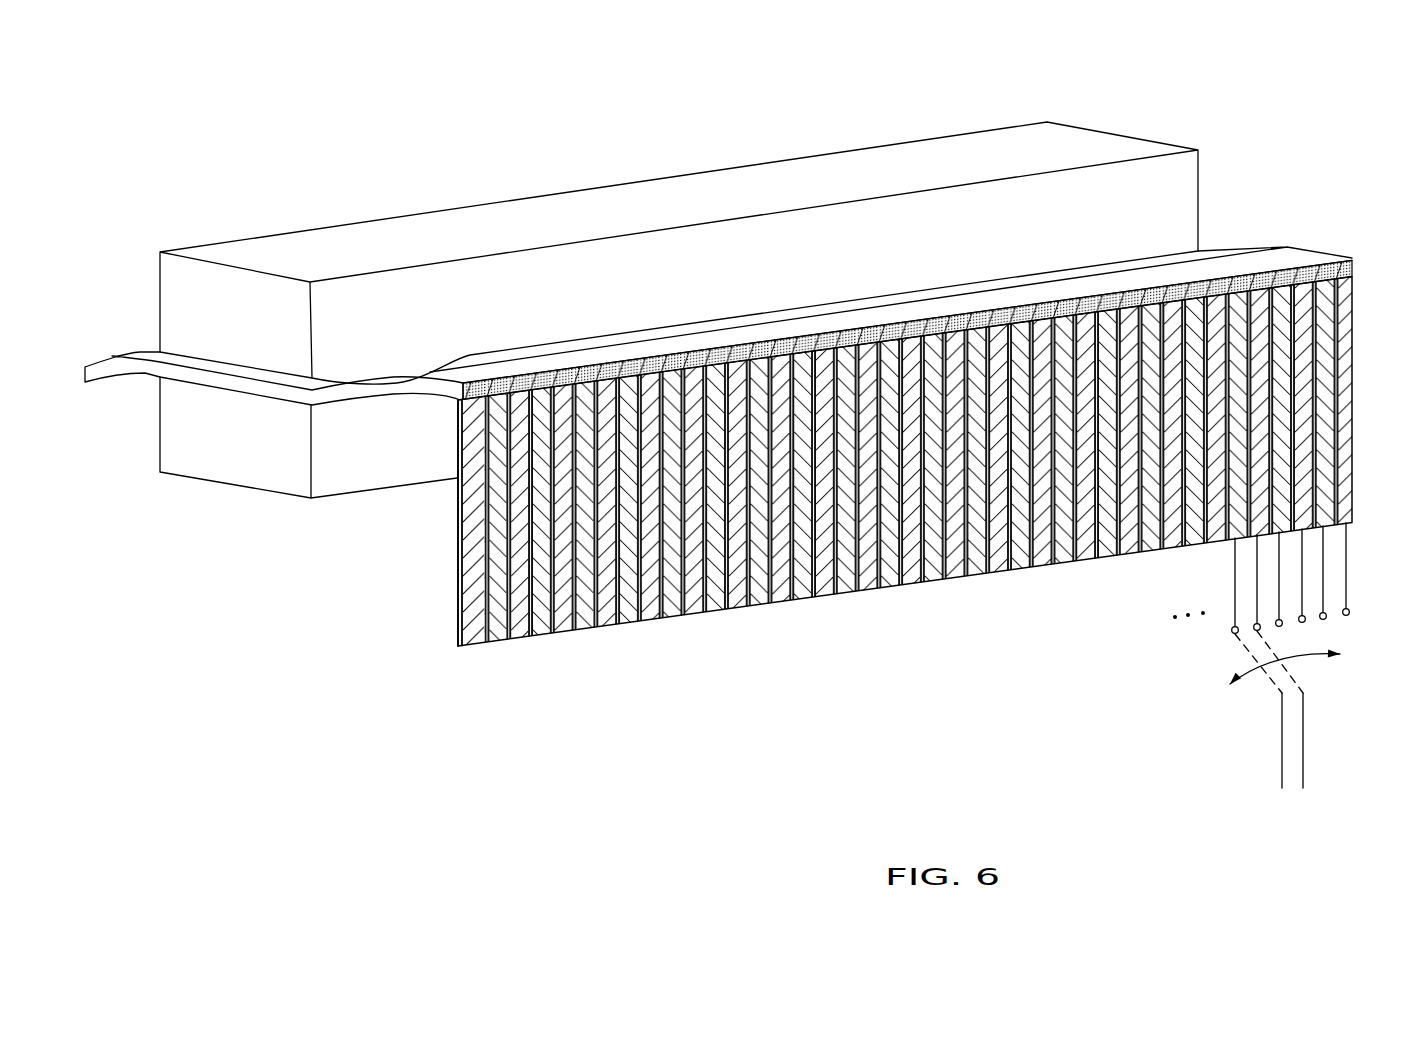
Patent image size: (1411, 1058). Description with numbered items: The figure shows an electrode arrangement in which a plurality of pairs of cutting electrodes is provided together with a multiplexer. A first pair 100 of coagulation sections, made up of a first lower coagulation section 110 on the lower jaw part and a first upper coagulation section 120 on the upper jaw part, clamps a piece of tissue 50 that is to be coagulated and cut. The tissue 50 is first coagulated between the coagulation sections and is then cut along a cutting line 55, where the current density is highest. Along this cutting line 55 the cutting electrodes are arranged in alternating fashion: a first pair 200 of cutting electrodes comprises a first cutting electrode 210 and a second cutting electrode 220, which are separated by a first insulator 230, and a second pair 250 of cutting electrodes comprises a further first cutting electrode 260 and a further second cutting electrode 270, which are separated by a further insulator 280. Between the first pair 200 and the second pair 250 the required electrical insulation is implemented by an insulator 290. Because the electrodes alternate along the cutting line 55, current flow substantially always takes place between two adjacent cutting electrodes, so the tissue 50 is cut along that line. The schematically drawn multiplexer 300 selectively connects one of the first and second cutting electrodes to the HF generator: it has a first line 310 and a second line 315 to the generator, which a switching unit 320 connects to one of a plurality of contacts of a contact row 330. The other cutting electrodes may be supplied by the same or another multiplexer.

The first pair of coagulation sections 100 is at (243, 147).
The first lower coagulation section 110 is at (220, 468).
The first upper coagulation section 120 is at (380, 237).
The tissue 50 is at (1296, 250).
The cutting line 55 is at (1326, 268).
The first pair of cutting electrodes 200 is at (508, 727).
The first cutting electrode 210 is at (472, 642).
The second cutting electrode 220 is at (498, 635).
The first insulator 230 is at (462, 618).
The second pair of cutting electrodes 250 is at (588, 700).
The further first cutting electrode 260 is at (523, 633).
The further second cutting electrode 270 is at (542, 627).
The further insulator 280 is at (533, 550).
The insulator 290 is at (507, 513).
The multiplexer 300 is at (1136, 725).
The first line 310 is at (1283, 740).
The second line 315 is at (1305, 727).
The switching unit 320 is at (1225, 673).
The contact row 330 is at (1205, 626).